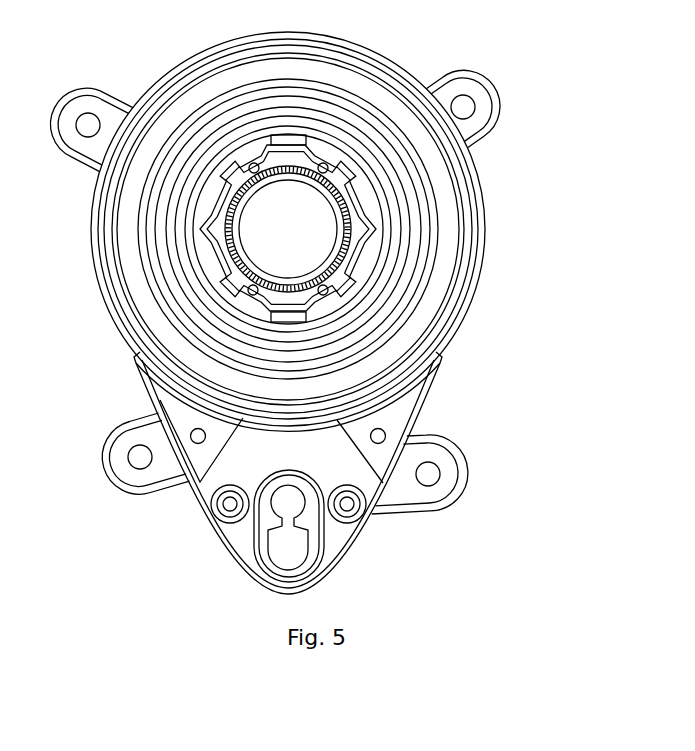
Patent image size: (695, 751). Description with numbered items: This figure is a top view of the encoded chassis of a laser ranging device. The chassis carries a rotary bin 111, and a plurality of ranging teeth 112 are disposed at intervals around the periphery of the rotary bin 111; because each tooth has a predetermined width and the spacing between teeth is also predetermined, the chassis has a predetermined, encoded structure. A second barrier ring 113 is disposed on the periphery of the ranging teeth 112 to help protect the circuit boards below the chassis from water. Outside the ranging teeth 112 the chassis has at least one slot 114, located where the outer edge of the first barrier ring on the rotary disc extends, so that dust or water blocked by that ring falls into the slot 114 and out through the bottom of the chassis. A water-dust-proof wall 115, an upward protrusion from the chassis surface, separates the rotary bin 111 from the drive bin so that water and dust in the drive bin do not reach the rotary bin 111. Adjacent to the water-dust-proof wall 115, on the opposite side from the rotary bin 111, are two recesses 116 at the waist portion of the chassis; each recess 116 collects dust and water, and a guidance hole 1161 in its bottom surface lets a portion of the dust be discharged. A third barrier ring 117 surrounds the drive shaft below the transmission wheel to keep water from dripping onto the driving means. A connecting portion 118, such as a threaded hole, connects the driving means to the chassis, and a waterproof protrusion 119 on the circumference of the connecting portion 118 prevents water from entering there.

The rotary bin 111 is at (405, 193).
The ranging teeth 112 is at (420, 320).
The second barrier ring 113 is at (353, 60).
The slot 114 is at (470, 218).
The water-dust-proof wall 115 is at (140, 385).
The recess 116 is at (393, 412).
The guidance hole 1161 is at (386, 436).
The third barrier ring 117 is at (322, 538).
The connecting portion 118 is at (378, 493).
The waterproof protrusion 119 is at (370, 512).